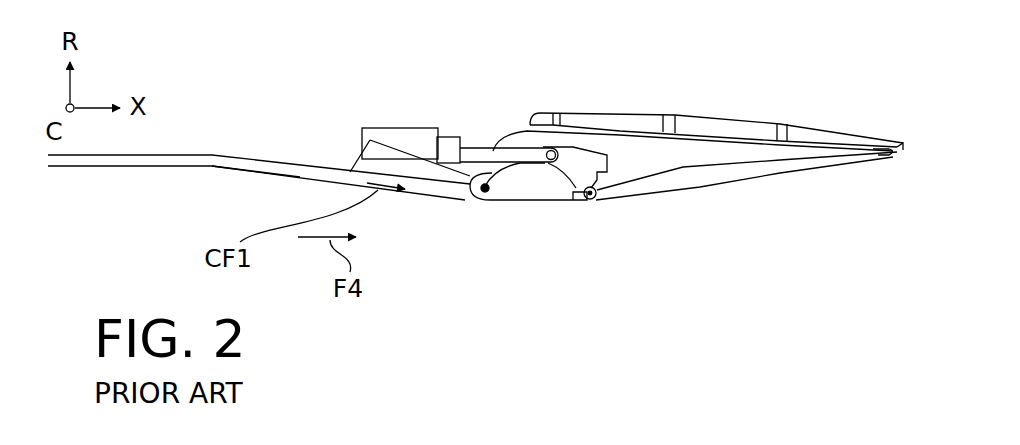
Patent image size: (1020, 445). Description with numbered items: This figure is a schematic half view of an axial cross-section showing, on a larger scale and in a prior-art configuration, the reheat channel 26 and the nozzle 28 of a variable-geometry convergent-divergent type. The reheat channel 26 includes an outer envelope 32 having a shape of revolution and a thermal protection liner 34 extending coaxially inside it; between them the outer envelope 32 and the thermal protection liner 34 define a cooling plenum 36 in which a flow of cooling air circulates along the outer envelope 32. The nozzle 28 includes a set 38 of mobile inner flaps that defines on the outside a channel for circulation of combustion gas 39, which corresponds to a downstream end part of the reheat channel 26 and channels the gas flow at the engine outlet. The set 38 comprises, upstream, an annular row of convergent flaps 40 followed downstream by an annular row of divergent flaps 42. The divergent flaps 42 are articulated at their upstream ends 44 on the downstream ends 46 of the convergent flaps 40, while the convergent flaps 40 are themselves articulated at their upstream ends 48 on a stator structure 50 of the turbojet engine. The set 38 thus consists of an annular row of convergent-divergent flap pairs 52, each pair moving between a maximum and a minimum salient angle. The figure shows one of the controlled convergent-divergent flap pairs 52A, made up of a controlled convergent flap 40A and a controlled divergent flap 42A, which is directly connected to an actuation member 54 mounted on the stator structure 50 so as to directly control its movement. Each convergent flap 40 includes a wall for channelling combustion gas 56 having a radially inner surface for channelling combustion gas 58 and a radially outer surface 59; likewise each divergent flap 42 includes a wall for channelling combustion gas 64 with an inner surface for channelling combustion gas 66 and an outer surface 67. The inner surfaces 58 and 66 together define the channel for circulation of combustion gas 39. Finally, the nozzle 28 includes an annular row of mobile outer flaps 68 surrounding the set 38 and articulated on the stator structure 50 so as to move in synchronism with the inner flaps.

The reheat channel 26 is at (259, 163).
The nozzle 28 is at (632, 225).
The outer envelope 32 is at (242, 158).
The thermal protection liner 34 is at (250, 175).
The cooling plenum 36 is at (277, 174).
The set of mobile inner flaps 38 is at (658, 243).
The channel for circulation of combustion gas 39 is at (795, 215).
The convergent flaps 40 is at (653, 203).
The controlled convergent flaps 40A is at (653, 203).
The divergent flaps 42 is at (729, 199).
The controlled divergent flaps 42A is at (729, 199).
The upstream ends of the divergent flaps 44 is at (598, 199).
The downstream ends of the convergent flaps 46 is at (575, 203).
The upstream ends of the convergent flaps 48 is at (480, 200).
The stator structure 50 is at (320, 164).
The convergent-divergent flap pairs 52 is at (658, 224).
The controlled convergent-divergent flap pairs 52A is at (658, 224).
The actuation members 54 is at (480, 148).
The wall for channelling combustion gas 56 is at (500, 199).
The inner surface for channelling combustion gas 58 is at (550, 199).
The outer surface 59 is at (557, 200).
The wall for channelling combustion gas 64 is at (757, 178).
The inner surface for channelling combustion gas 66 is at (847, 160).
The outer surface 67 is at (847, 153).
The mobile outer flaps 68 is at (738, 113).